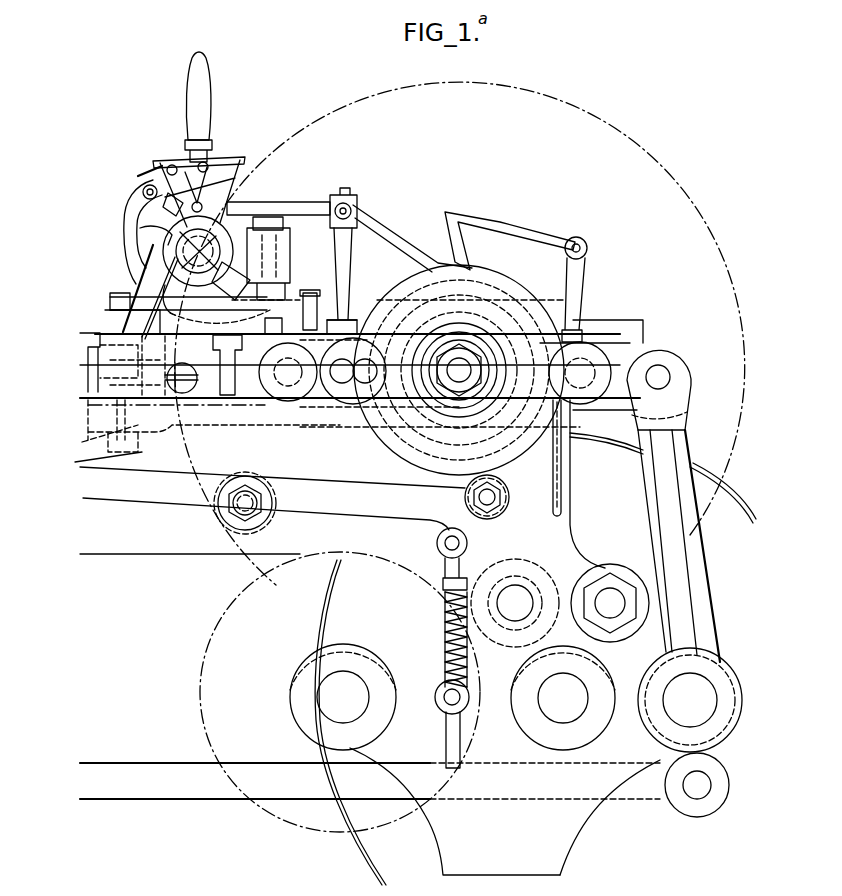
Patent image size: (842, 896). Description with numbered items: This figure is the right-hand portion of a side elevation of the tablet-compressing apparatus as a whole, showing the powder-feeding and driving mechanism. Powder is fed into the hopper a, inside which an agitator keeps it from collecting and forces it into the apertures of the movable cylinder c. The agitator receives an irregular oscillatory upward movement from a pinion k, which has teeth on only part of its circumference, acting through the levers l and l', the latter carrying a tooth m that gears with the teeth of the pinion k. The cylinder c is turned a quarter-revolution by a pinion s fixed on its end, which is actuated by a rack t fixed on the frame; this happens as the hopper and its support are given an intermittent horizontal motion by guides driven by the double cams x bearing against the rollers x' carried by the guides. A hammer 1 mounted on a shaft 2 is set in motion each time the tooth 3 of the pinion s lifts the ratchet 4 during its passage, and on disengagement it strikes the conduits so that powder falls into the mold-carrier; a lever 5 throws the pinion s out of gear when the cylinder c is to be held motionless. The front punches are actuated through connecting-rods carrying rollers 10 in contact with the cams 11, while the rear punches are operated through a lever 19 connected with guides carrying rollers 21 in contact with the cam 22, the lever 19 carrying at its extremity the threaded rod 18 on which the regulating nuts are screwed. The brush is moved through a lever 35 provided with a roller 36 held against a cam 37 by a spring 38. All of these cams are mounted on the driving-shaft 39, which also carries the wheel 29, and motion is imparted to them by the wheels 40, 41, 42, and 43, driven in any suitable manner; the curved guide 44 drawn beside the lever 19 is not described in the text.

The hammer 1 is at (173, 280).
The shaft 2 is at (143, 187).
The tooth 3 is at (213, 160).
The ratchet 4 is at (165, 234).
The lever 5 is at (207, 100).
The hopper a is at (162, 163).
The movable cylinder c is at (180, 260).
The pinion s is at (183, 290).
The rack t is at (123, 300).
The lever l is at (292, 242).
The lever l' is at (412, 222).
The tooth m is at (490, 330).
The pinion k is at (522, 318).
The cams 11 is at (540, 295).
The driving-shaft 39 is at (459, 368).
The double cams x is at (464, 343).
The rollers x' is at (458, 359).
The rollers 21 is at (263, 405).
The rollers 10 is at (367, 400).
The cam 22 is at (383, 400).
The wheel 29 is at (668, 173).
The cam 37 is at (376, 325).
The roller 36 is at (500, 507).
The lever 35 is at (170, 547).
The spring 38 is at (440, 623).
The wheel 40 is at (290, 696).
The wheel 43 is at (527, 732).
The wheel 42 is at (563, 573).
The lever 19 is at (700, 607).
The guide 44 is at (740, 520).
The rod 18 is at (100, 778).
The wheel 41 is at (398, 835).